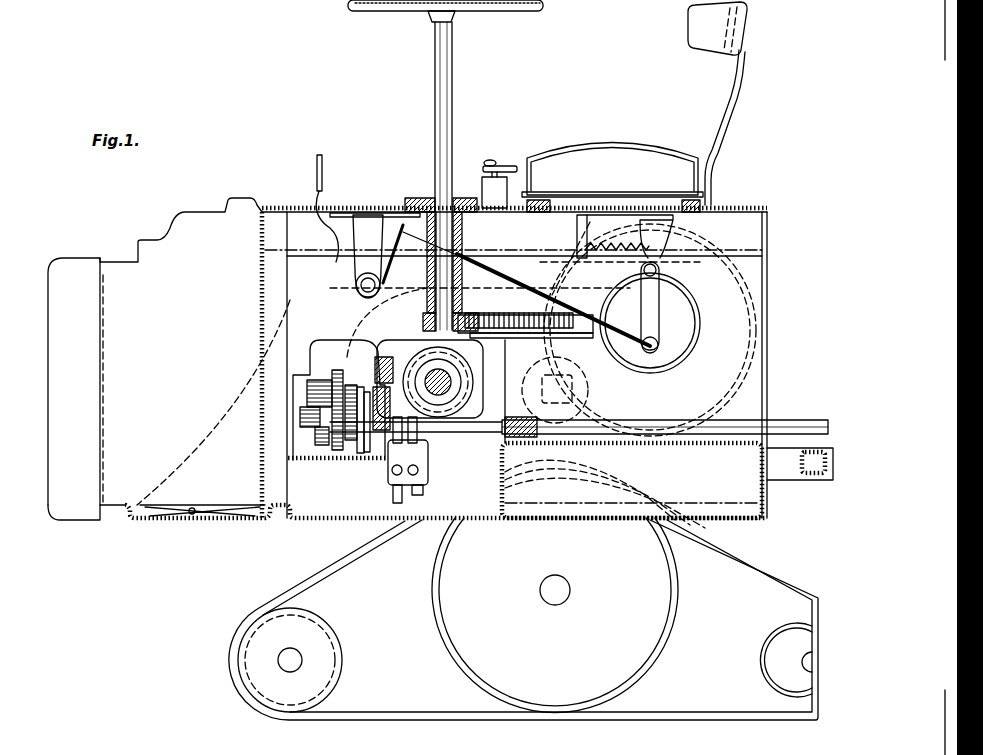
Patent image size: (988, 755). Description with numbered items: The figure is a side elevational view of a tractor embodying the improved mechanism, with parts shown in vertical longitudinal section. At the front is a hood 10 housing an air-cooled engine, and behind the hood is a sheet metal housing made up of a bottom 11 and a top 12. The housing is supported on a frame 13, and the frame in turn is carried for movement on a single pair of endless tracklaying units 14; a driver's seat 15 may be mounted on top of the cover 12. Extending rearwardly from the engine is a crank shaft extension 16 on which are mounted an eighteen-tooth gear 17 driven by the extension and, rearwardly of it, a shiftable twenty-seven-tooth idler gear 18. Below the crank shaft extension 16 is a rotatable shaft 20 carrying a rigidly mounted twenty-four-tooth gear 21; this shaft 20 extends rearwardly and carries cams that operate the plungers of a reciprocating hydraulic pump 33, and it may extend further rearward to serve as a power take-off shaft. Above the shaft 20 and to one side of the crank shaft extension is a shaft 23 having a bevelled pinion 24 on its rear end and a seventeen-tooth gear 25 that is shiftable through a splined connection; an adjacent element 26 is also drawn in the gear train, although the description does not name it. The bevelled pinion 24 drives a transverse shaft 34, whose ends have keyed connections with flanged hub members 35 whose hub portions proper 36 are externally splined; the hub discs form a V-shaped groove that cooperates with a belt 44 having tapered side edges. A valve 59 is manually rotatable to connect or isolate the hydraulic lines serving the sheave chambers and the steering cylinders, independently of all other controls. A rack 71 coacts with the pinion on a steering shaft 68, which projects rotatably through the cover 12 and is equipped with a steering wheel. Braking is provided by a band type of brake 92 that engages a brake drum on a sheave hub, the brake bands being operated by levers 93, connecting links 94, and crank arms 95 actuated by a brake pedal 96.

The front hood 10 is at (124, 497).
The housing bottom 11 is at (330, 520).
The housing top 12 is at (350, 208).
The frame 13 is at (793, 480).
The endless tracklaying unit 14 is at (345, 725).
The driver's seat 15 is at (640, 145).
The crank shaft extension 16 is at (305, 415).
The 18-tooth gear 17 is at (340, 450).
The shiftable idler gear 18 is at (357, 452).
The rotatable shaft 20 is at (788, 420).
The 24-tooth gear 21 is at (320, 446).
The shaft 23 is at (368, 385).
The bevelled pinion 24 is at (355, 362).
The 17-tooth gear 25 is at (336, 370).
The gear 26 is at (307, 392).
The reciprocating hydraulic pump 33 is at (388, 470).
The shaft 34 is at (452, 382).
The flanged hub member 35 is at (470, 378).
The hub portion 36 is at (482, 356).
The belt 44 is at (565, 240).
The valve 59 is at (481, 190).
The steering shaft 68 is at (453, 149).
The rack 71 is at (540, 338).
The band type brake 92 is at (697, 300).
The lever 93 is at (655, 310).
The connecting link 94 is at (520, 265).
The crank arm 95 is at (388, 260).
The brake pedal 96 is at (324, 165).